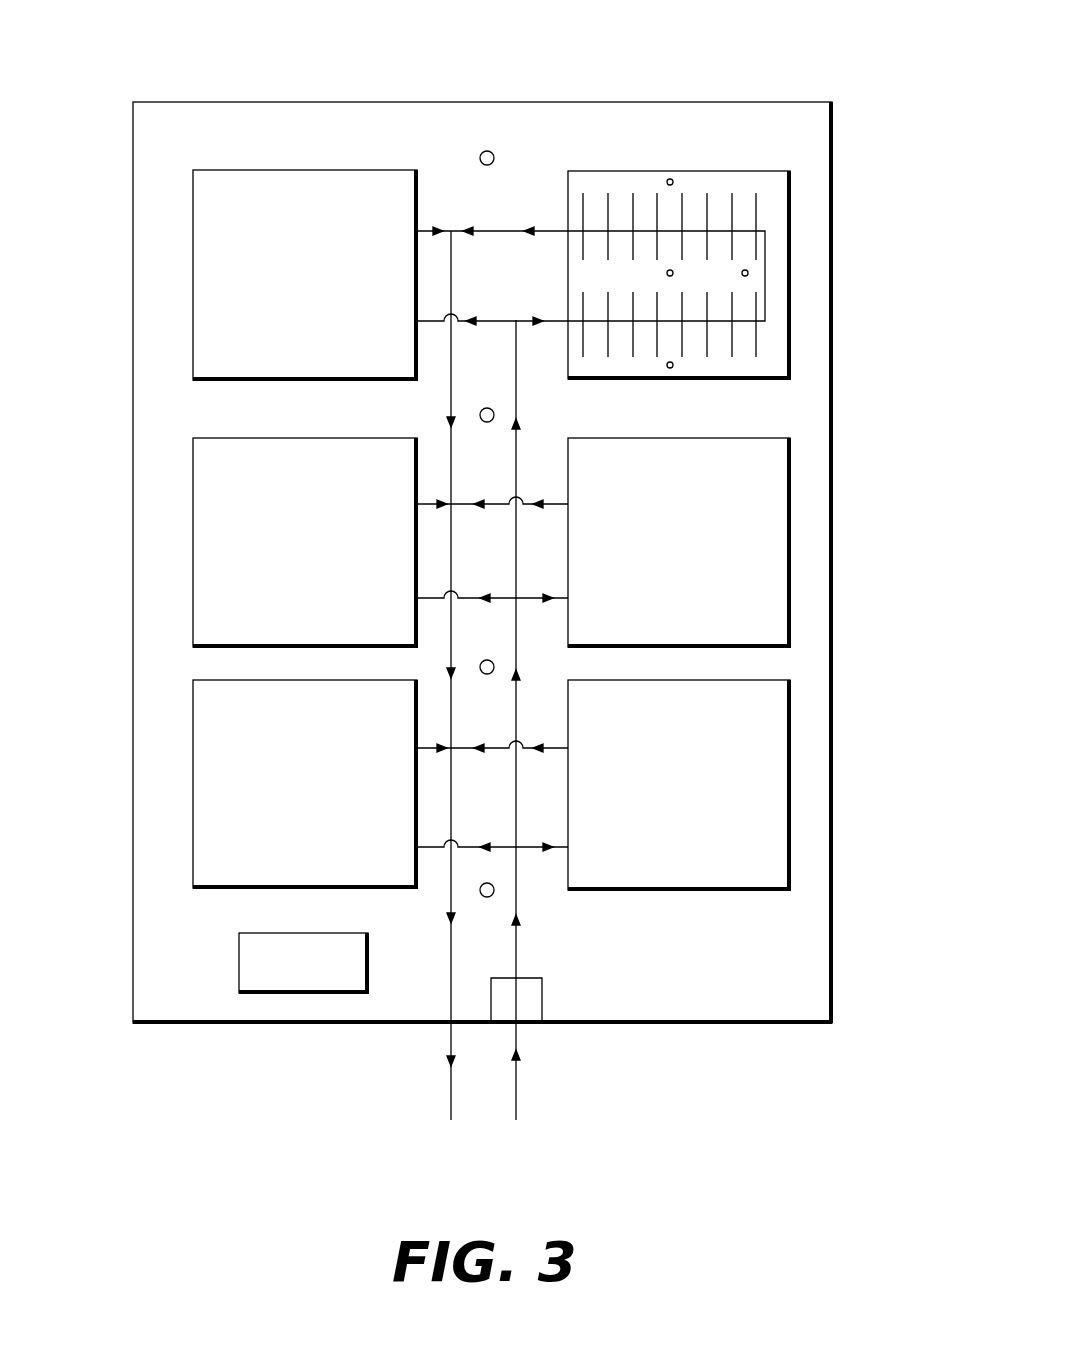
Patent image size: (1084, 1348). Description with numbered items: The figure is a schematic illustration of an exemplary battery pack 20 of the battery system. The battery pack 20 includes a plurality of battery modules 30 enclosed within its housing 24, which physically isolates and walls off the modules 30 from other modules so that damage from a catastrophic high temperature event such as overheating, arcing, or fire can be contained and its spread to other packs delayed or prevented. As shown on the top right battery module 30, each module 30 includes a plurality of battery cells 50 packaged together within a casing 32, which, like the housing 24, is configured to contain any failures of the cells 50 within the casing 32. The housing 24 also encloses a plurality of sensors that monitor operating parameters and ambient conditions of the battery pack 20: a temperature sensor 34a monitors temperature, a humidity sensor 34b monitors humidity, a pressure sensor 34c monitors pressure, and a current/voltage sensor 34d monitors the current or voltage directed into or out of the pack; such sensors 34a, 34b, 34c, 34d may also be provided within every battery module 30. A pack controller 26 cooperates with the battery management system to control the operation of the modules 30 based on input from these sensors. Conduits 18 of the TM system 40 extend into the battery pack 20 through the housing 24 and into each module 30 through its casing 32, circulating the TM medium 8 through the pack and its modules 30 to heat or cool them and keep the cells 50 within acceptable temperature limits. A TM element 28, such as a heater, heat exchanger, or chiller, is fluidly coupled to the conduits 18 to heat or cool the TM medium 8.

The TM medium 8 is at (448, 1063).
The conduits 18 is at (545, 1067).
The battery pack 20 is at (845, 272).
The housing 24 is at (832, 548).
The pack controller 26 is at (304, 963).
The TM element 28 is at (530, 998).
The battery module 30 is at (766, 166).
The casing 32 is at (630, 170).
The temperature sensor 34a is at (487, 151).
The humidity sensor 34b is at (480, 413).
The pressure sensor 34c is at (480, 667).
The current/voltage sensor 34d is at (480, 892).
The TM system 40 is at (437, 1106).
The battery cells 50 is at (757, 350).